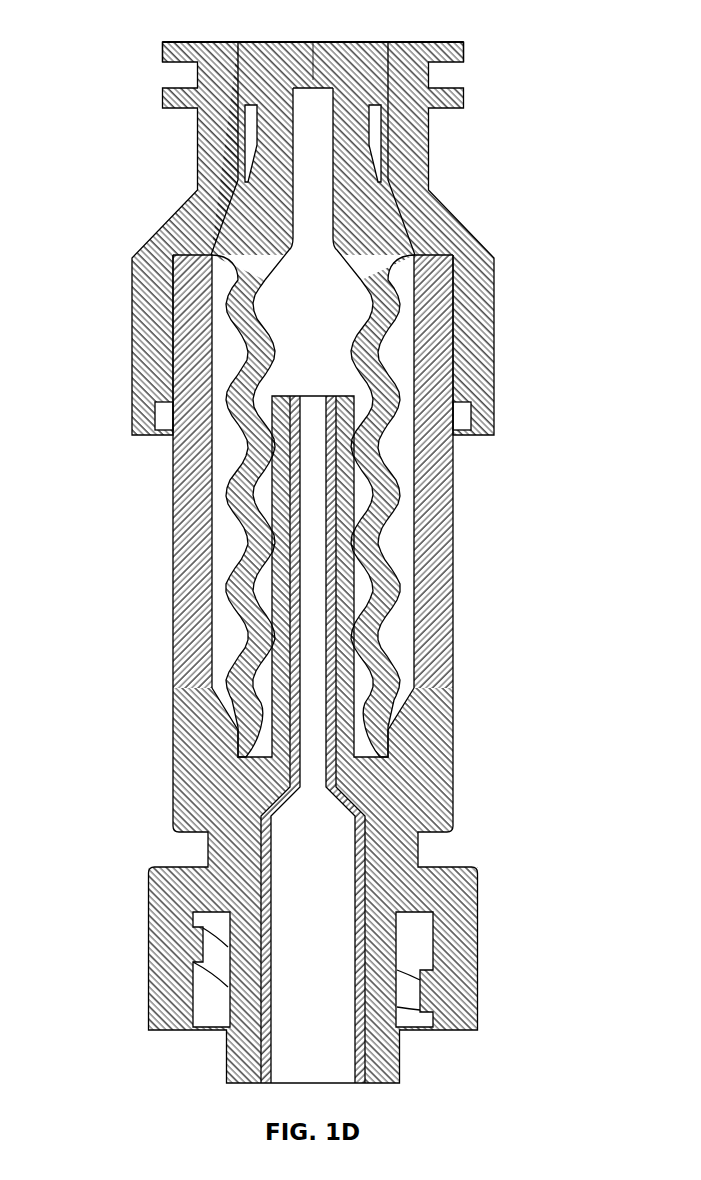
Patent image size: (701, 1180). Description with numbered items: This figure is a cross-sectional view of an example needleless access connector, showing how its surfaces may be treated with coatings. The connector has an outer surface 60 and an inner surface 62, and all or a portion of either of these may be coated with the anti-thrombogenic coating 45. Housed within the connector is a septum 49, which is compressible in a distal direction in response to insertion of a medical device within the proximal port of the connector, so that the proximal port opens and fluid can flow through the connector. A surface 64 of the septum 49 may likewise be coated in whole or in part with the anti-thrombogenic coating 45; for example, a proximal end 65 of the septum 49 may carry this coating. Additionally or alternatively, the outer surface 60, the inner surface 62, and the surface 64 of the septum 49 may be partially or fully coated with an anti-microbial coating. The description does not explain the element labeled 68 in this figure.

The anti-thrombogenic coating 45 is at (390, 767).
The septum 49 is at (357, 190).
The outer surface 60 is at (197, 150).
The inner surface 62 is at (418, 332).
The surface of the septum 64 is at (265, 325).
The proximal end of the septum 65 is at (380, 42).
The flow channel 68 is at (297, 882).